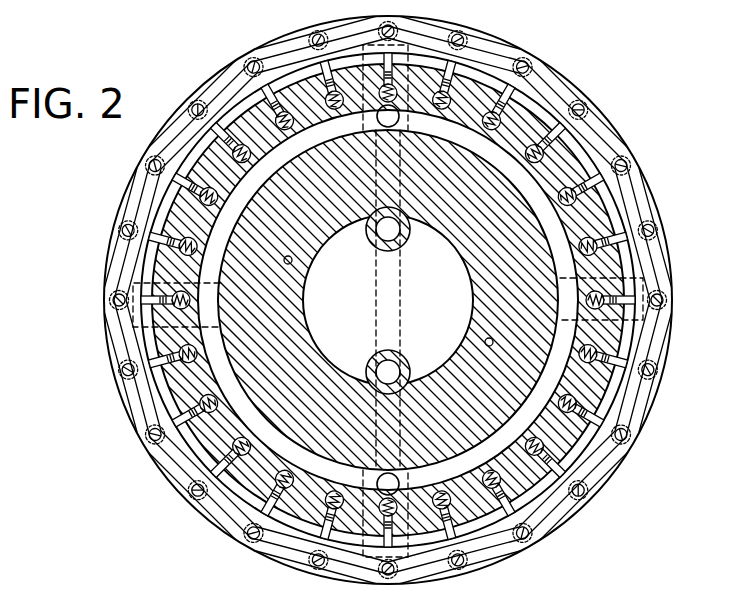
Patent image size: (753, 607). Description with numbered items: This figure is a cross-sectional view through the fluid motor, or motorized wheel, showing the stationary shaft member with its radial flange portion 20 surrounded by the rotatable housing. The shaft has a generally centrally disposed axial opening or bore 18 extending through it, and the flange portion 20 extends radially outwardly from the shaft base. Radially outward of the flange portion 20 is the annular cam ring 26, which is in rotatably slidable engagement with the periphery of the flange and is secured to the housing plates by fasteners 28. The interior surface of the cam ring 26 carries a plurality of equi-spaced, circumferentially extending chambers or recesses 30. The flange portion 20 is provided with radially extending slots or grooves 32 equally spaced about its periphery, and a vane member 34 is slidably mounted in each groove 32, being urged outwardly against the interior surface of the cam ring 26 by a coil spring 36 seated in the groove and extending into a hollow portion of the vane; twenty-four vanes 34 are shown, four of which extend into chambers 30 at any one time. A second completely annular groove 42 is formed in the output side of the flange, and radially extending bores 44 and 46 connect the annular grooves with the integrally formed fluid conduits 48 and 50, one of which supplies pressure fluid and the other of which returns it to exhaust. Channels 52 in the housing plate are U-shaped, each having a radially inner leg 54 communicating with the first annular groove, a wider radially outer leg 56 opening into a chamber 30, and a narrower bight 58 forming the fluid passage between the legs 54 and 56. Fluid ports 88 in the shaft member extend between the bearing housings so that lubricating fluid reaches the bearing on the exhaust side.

The axial opening or bore 18 is at (400, 311).
The radial flange portion 20 is at (322, 235).
The cam ring 26 is at (576, 517).
The fasteners 28 is at (648, 226).
The chambers or recesses 30 is at (480, 70).
The slots or grooves 32 is at (590, 402).
The vane member 34 is at (527, 100).
The coil spring 36 is at (172, 232).
The second annular groove 42 is at (169, 477).
The radially extending bore 44 is at (400, 120).
The radially extending bore 46 is at (400, 484).
The fluid conduit 48 is at (406, 248).
The fluid conduit 50 is at (386, 352).
The channels 52 is at (643, 287).
The leg 54 is at (380, 118).
The leg 56 is at (438, 37).
The bight 58 is at (399, 84).
The fluid ports 88 is at (291, 263).